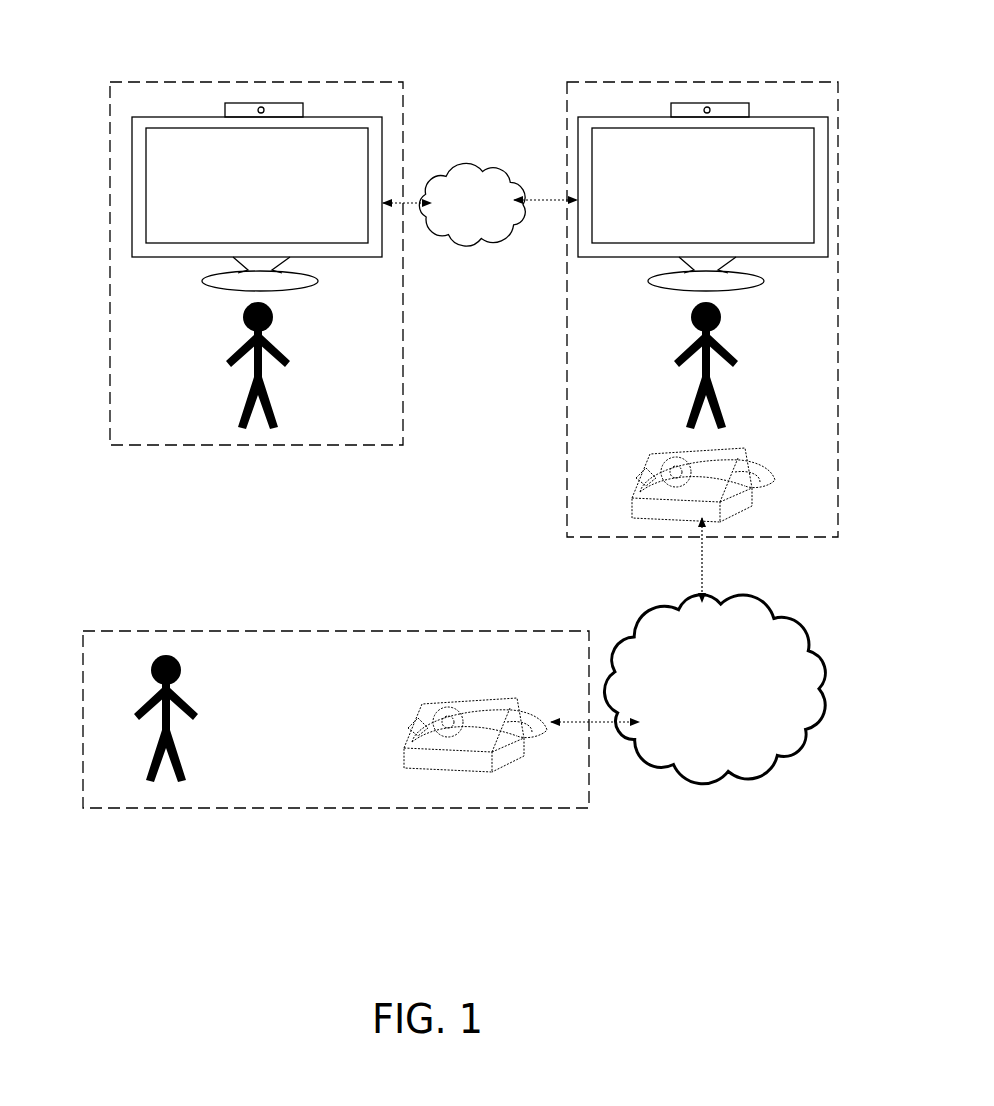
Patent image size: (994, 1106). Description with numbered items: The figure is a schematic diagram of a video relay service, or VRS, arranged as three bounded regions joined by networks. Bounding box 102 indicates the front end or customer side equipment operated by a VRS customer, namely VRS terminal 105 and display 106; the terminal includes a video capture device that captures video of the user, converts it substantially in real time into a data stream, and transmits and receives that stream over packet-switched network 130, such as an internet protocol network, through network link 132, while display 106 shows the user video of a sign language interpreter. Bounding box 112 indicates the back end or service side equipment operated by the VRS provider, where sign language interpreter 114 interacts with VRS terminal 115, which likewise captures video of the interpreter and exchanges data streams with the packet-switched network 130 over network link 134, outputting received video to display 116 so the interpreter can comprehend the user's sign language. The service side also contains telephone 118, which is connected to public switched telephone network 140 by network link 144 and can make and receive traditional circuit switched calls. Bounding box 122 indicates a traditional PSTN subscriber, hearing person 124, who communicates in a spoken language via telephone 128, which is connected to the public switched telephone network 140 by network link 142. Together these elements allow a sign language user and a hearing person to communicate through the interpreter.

The bounding box 102 is at (373, 81).
The VRS terminal 105 is at (265, 103).
The display 106 is at (132, 154).
The bounding box 112 is at (806, 80).
The sign language interpreter 114 is at (284, 353).
The VRS terminal 115 is at (712, 103).
The display 116 is at (820, 177).
The telephone 118 is at (753, 452).
The bounding box 122 is at (322, 631).
The hearing person 124 is at (184, 697).
The telephone 128 is at (432, 766).
The packet-switched network 130 is at (500, 241).
The network link 132 is at (400, 184).
The network link 134 is at (527, 184).
The public switched telephone network 140 is at (733, 770).
The network link 142 is at (590, 722).
The network link 144 is at (703, 572).